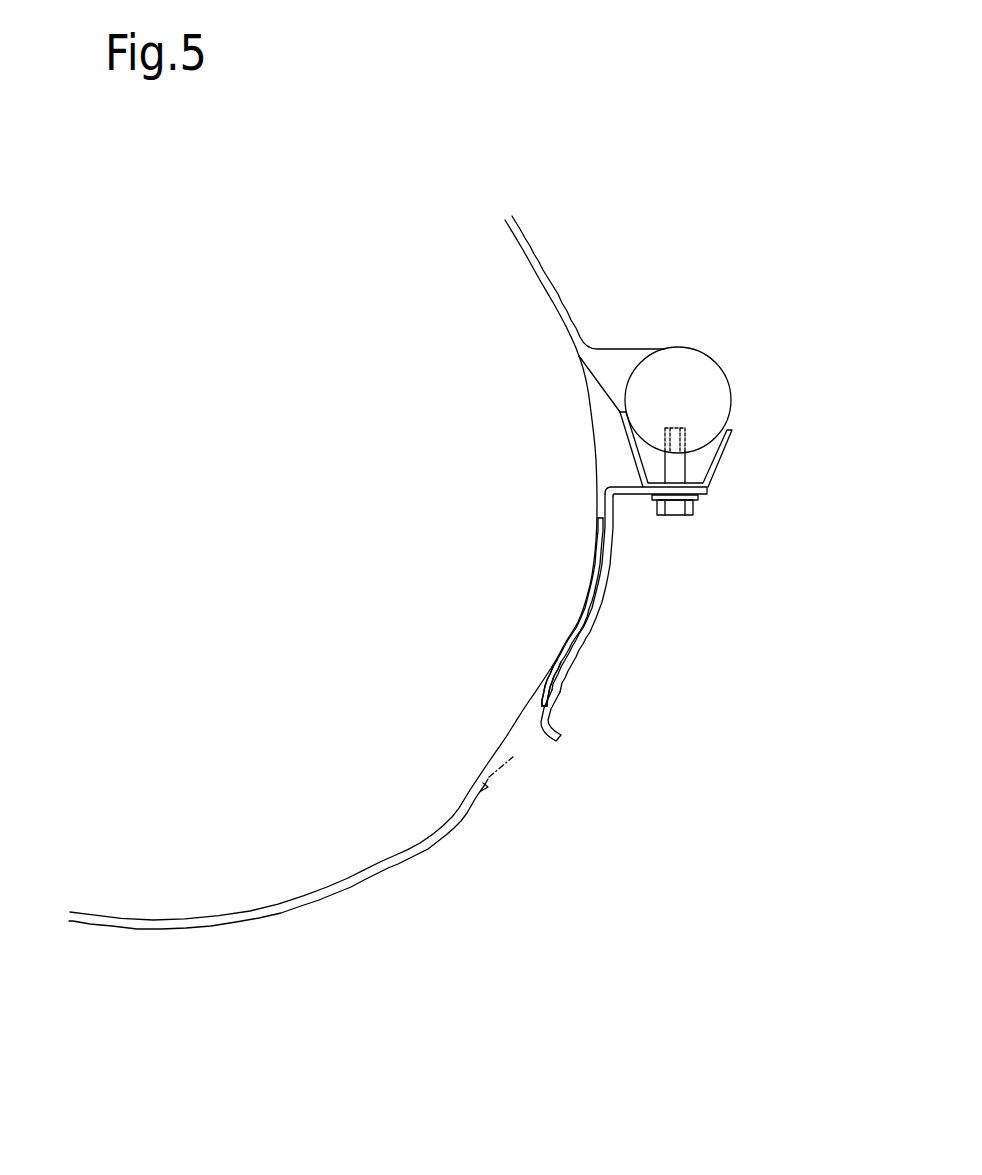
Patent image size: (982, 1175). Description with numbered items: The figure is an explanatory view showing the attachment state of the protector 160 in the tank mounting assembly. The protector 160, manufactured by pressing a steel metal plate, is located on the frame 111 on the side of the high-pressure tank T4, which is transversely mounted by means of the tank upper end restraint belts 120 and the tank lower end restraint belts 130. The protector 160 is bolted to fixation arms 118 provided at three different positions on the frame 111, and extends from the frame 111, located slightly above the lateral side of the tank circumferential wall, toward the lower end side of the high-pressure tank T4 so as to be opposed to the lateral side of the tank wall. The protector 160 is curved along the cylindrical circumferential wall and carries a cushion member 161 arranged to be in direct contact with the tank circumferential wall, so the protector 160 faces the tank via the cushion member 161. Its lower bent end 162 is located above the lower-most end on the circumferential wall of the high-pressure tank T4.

The frame 111 is at (703, 375).
The fixation arm 118 is at (720, 468).
The tank upper end restraint belt 120 is at (546, 267).
The tank lower end restraint belt 130 is at (451, 822).
The protector 160 is at (603, 583).
The cushion member 161 is at (550, 684).
The lower bent end 162 is at (557, 728).
The high-pressure tank T4 is at (333, 843).